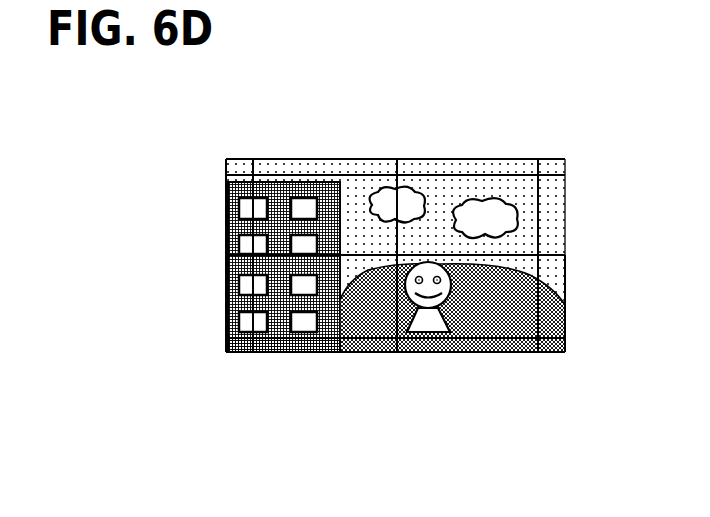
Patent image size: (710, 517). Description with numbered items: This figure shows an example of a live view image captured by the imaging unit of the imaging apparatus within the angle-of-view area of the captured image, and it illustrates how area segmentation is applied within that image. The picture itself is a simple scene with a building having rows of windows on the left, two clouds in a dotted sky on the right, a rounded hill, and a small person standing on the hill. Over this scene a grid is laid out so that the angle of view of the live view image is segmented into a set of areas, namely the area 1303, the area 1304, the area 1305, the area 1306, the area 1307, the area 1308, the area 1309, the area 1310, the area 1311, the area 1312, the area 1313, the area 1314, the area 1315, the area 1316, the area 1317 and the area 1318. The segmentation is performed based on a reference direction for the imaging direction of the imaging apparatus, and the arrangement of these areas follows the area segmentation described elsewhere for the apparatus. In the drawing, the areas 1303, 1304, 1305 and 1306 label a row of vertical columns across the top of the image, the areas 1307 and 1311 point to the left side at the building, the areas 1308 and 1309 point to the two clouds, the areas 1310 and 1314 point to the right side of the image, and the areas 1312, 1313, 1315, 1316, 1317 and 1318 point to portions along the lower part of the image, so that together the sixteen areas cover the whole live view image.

The area 1303 is at (237, 158).
The area 1304 is at (316, 158).
The area 1305 is at (433, 158).
The area 1306 is at (555, 158).
The area 1307 is at (242, 232).
The area 1308 is at (382, 184).
The area 1309 is at (493, 185).
The area 1310 is at (550, 205).
The area 1311 is at (242, 307).
The area 1312 is at (375, 327).
The area 1313 is at (507, 325).
The area 1314 is at (550, 317).
The area 1315 is at (242, 348).
The area 1316 is at (315, 348).
The area 1317 is at (458, 347).
The area 1318 is at (557, 347).